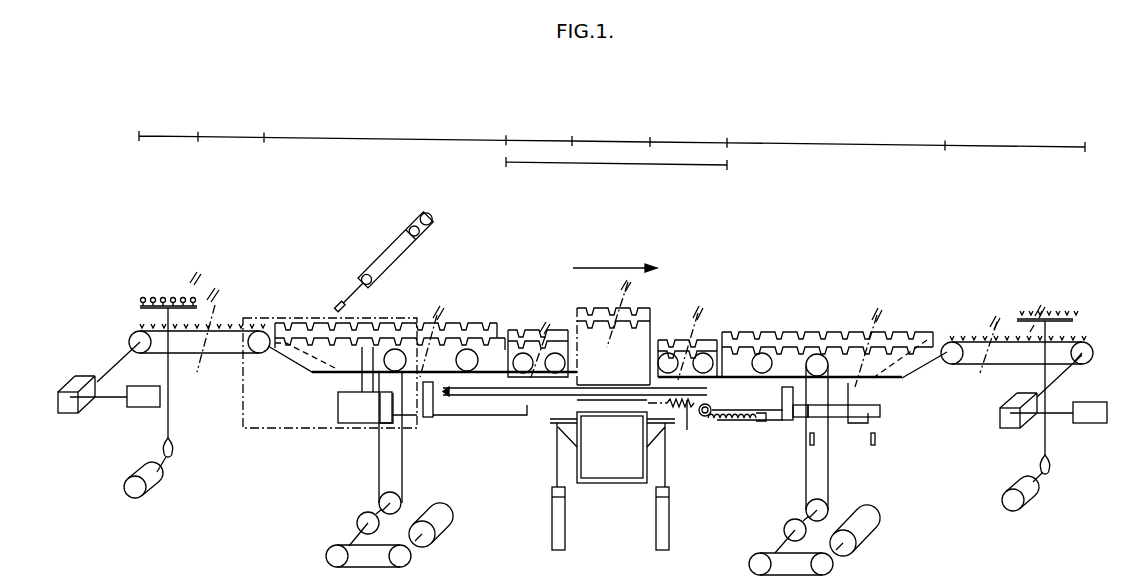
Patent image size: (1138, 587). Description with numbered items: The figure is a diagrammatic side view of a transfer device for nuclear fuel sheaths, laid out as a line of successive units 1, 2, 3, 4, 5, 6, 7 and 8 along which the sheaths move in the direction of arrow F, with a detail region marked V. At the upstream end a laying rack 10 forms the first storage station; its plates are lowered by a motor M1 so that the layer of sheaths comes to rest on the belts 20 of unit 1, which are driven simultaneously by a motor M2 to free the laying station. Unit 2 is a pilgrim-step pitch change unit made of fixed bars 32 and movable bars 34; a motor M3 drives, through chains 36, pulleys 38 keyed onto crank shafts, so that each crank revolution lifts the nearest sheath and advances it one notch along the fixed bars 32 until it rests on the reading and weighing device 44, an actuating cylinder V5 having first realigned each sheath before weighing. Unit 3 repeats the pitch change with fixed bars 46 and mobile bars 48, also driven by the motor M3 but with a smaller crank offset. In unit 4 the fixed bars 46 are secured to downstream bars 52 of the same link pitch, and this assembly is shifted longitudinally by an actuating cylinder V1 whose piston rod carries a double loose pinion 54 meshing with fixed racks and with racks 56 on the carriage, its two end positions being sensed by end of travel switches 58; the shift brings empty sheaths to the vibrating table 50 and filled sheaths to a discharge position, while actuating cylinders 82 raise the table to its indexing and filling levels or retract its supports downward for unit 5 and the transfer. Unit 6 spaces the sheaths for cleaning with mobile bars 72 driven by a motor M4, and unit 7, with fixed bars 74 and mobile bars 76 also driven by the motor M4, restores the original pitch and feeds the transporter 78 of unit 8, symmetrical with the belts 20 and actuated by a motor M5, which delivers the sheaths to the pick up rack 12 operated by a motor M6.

The unit 1 is at (168, 127).
The unit 2 is at (352, 129).
The unit 3 is at (539, 129).
The unit 4 is at (616, 155).
The unit 5 is at (611, 131).
The unit 6 is at (688, 131).
The unit 7 is at (836, 133).
The unit 8 is at (1015, 136).
The arrow F is at (615, 255).
The detail section V is at (290, 429).
The laying rack 10 is at (146, 300).
The pick up rack 12 is at (1060, 312).
The belts 20 is at (233, 323).
The fixed bars 32 is at (440, 330).
The movable bar 34 is at (297, 362).
The chains 36 is at (402, 467).
The pulleys 38 is at (397, 358).
The reading and weighing device 44 is at (348, 402).
The fixed bars 46 is at (528, 343).
The mobile bars 48 is at (525, 345).
The vibrating table 50 is at (626, 459).
The bars 52 is at (590, 353).
The double loose pinion 54 is at (708, 416).
The racks 56 is at (687, 430).
The end of travel switches 58 is at (814, 440).
The mobile bars 72 is at (700, 342).
The fixed bars 74 is at (792, 332).
The mobile bars 76 is at (818, 358).
The transporter 78 is at (1002, 366).
The actuating cylinders 82 is at (560, 525).
The actuating cylinder V1 is at (880, 411).
The actuating cylinder V5 is at (431, 227).
The motor M1 is at (155, 481).
The motor M2 is at (109, 377).
The motor M3 is at (447, 525).
The motor M4 is at (871, 530).
The motor M5 is at (1053, 410).
The motor M6 is at (1033, 495).